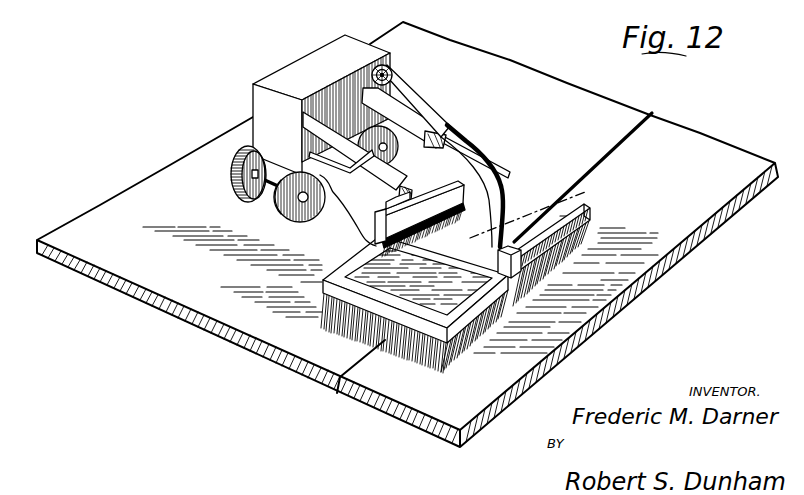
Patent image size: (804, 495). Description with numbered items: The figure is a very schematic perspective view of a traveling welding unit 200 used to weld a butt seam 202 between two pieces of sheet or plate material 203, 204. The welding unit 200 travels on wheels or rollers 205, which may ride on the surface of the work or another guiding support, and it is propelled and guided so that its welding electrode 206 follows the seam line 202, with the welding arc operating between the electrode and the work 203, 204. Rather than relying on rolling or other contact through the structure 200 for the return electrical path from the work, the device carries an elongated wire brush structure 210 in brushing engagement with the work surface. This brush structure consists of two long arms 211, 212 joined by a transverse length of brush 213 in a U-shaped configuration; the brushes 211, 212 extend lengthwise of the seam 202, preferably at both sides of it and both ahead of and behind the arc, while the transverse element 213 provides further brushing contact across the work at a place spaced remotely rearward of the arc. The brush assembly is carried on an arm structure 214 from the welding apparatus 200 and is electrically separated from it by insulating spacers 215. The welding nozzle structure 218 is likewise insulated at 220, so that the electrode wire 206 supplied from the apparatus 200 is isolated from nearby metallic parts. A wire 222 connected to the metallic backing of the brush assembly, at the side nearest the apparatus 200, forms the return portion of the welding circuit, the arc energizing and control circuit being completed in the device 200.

The traveling welding unit 200 is at (304, 46).
The butt seam 202 is at (613, 142).
The sheet or plate material 203 is at (207, 313).
The sheet or plate material 204 is at (407, 398).
The wheels or rollers 205 is at (291, 216).
The welding electrode 206 is at (413, 93).
The elongated wire brush structure 210 is at (593, 218).
The long brush arm 211 is at (390, 185).
The long brush arm 212 is at (556, 262).
The transverse length of brush 213 is at (357, 303).
The arm structure 214 is at (566, 202).
The insulating spacers 215 is at (525, 322).
The welding nozzle structure 218 is at (504, 183).
The insulation 220 is at (457, 137).
The return wire 222 is at (345, 212).